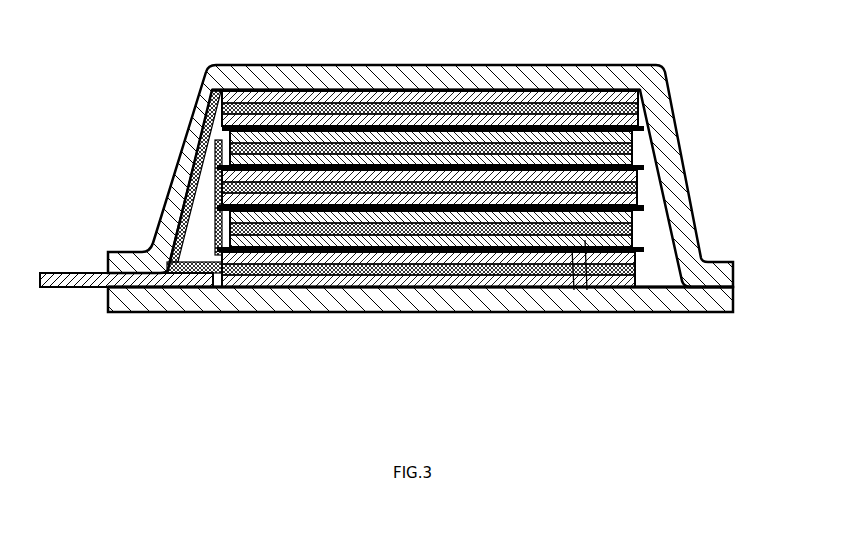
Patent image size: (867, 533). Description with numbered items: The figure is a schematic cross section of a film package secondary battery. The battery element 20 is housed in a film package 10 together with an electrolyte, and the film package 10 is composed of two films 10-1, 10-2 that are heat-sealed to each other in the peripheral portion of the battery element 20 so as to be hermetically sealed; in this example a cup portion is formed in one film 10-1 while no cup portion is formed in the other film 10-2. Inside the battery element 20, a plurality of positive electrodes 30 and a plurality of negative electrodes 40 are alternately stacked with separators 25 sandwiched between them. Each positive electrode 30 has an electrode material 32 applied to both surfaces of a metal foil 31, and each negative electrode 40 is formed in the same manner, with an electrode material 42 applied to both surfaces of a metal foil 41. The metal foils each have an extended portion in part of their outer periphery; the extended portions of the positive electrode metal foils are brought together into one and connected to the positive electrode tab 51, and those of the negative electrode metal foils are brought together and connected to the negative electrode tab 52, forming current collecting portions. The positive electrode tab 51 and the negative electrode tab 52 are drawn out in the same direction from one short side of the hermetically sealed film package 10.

The film package 10 is at (470, 214).
The film 10-1 is at (725, 262).
The film 10-2 is at (446, 322).
The battery element 20 is at (305, 290).
The separator 25 is at (585, 245).
The positive electrode 30 is at (222, 150).
The metal foil 31 is at (415, 146).
The electrode material 32 is at (431, 97).
The negative electrode 40 is at (484, 159).
The metal foil 41 is at (508, 106).
The electrode material 42 is at (572, 96).
The positive electrode tab 51 is at (126, 256).
The negative electrode tab 52 is at (73, 272).